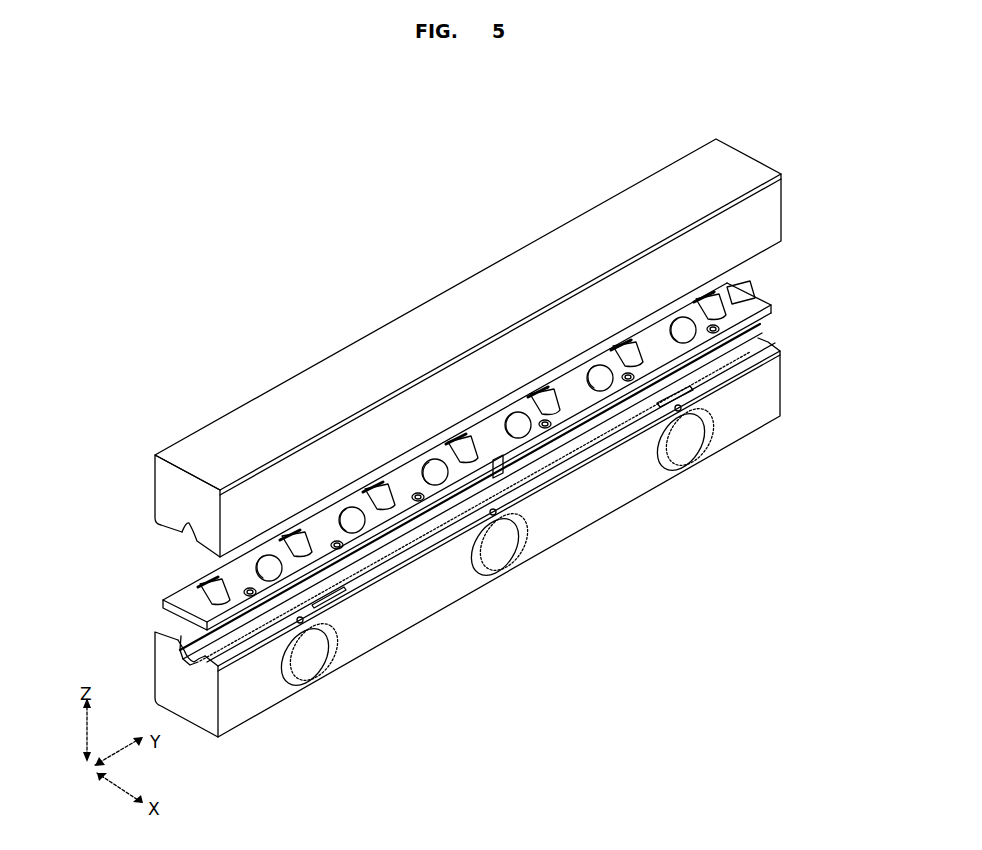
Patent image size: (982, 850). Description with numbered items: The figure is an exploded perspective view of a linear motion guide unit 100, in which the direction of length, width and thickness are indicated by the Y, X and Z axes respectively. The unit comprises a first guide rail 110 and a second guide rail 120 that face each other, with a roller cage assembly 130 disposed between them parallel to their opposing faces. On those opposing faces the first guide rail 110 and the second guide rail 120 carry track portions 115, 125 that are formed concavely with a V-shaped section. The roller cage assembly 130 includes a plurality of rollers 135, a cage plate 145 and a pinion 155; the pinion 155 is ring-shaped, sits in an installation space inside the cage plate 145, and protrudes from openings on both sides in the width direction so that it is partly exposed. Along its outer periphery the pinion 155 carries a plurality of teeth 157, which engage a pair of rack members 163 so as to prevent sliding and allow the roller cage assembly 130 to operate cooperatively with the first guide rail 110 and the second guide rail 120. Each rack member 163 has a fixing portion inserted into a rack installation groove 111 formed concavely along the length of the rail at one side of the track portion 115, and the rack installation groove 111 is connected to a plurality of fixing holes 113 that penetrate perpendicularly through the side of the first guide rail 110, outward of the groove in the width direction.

The linear motion guide unit 100 is at (332, 270).
The first guide rail 110 is at (382, 607).
The rack installation groove 111 is at (333, 612).
The fixing hole 113 is at (497, 480).
The track portion 115 is at (186, 652).
The second guide rail 120 is at (432, 323).
The track portion 125 is at (182, 532).
The roller cage assembly 130 is at (756, 289).
The roller 135 is at (604, 392).
The cage plate 145 is at (775, 394).
The pinion 155 is at (560, 412).
The teeth 157 is at (495, 520).
The rack member 163 is at (423, 565).